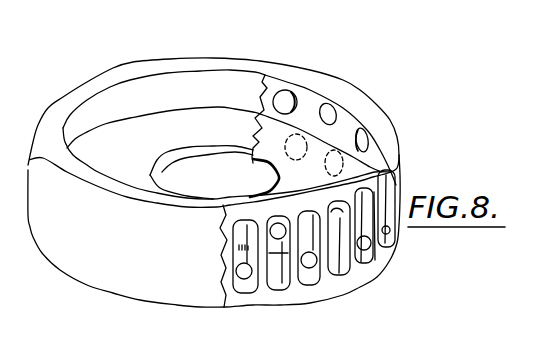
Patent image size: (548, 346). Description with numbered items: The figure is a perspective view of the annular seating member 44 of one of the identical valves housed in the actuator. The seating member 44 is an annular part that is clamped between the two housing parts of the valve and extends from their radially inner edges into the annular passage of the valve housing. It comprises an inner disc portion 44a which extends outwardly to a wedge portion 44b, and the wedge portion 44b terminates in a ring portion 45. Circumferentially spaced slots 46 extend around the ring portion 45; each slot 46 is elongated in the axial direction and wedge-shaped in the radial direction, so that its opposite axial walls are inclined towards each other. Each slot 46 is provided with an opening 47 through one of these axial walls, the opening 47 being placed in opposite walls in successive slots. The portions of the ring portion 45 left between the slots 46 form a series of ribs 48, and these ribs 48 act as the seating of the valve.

The annular seating member 44 is at (399, 117).
The inner disc portion 44a is at (279, 132).
The wedge portion 44b is at (342, 122).
The ring portion 45 is at (293, 77).
The slots 46 is at (335, 260).
The opening 47 is at (326, 113).
The ribs 48 is at (377, 238).